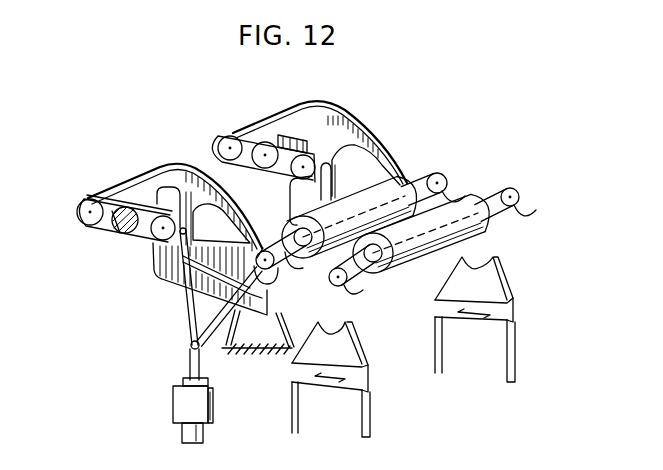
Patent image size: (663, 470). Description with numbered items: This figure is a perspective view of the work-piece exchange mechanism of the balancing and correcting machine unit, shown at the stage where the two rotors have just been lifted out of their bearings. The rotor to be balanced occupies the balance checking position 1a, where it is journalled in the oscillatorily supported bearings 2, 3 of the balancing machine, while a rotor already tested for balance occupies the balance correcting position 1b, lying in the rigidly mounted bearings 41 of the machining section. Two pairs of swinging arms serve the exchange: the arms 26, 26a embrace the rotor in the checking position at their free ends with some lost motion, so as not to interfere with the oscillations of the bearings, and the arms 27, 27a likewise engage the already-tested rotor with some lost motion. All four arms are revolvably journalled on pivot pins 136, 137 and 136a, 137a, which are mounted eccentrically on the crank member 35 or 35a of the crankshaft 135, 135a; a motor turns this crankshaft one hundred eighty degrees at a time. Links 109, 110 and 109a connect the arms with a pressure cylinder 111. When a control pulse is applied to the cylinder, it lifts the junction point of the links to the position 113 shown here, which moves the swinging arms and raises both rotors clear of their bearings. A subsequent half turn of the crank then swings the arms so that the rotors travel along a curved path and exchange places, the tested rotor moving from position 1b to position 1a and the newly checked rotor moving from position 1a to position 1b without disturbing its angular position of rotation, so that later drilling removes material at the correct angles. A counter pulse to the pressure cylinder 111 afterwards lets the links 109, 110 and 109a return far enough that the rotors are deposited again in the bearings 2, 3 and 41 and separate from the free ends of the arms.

The balance checking position 1a is at (468, 196).
The balance correcting position 1b is at (405, 184).
The bearing 2 is at (371, 378).
The bearing 3 is at (516, 313).
The swinging arm 26 is at (170, 278).
The swinging arm 26a is at (291, 200).
The swinging arm 27 is at (178, 164).
The swinging arm 27a is at (346, 119).
The crank member 35 is at (112, 228).
The crank member 35a is at (298, 130).
The rigidly mounted bearings 41 is at (257, 358).
The link 109 is at (215, 334).
The link 109a is at (332, 186).
The link 110 is at (186, 320).
The pressure cylinder 111 is at (172, 405).
The lifted position of link junction 113 is at (191, 345).
The crankshaft 135 is at (132, 232).
The crankshaft 135a is at (263, 144).
The pivot pin 136 is at (161, 244).
The pivot pin 136a is at (305, 160).
The pivot pin 137 is at (77, 213).
The pivot pin 137a is at (223, 137).